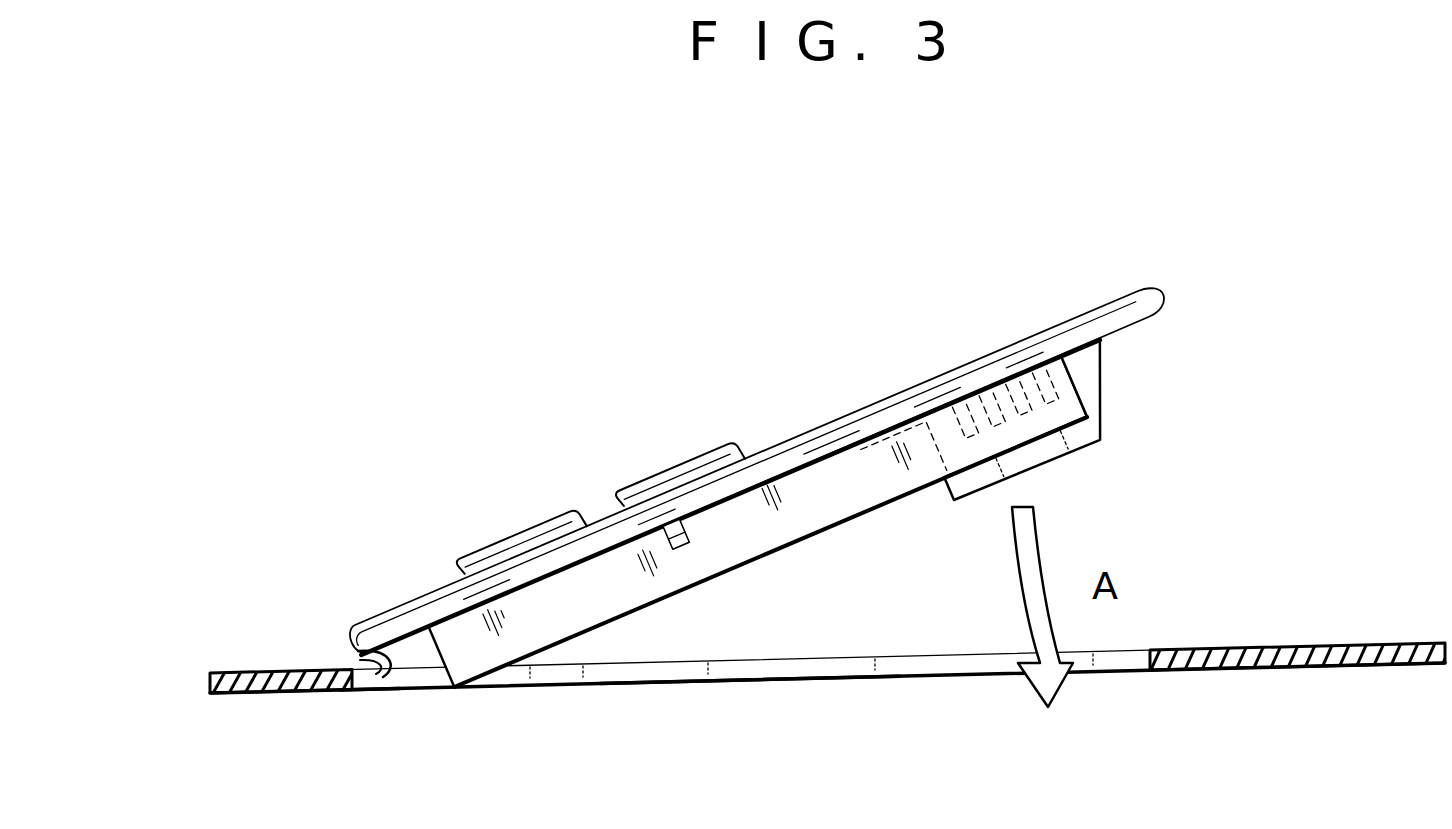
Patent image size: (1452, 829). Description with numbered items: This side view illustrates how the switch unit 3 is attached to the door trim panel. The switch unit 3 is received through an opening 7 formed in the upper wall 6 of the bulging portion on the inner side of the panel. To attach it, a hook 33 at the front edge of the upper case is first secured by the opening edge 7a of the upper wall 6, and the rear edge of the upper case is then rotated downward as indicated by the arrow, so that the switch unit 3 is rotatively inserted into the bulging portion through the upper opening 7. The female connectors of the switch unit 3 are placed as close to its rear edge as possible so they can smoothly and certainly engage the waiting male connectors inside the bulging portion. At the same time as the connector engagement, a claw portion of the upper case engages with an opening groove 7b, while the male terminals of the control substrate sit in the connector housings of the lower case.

The switch unit 3 is at (772, 502).
The upper wall 6 is at (287, 683).
The opening 7 is at (972, 658).
The opening edge 7a is at (358, 694).
The opening groove 7b is at (748, 683).
The hook 33 is at (395, 690).